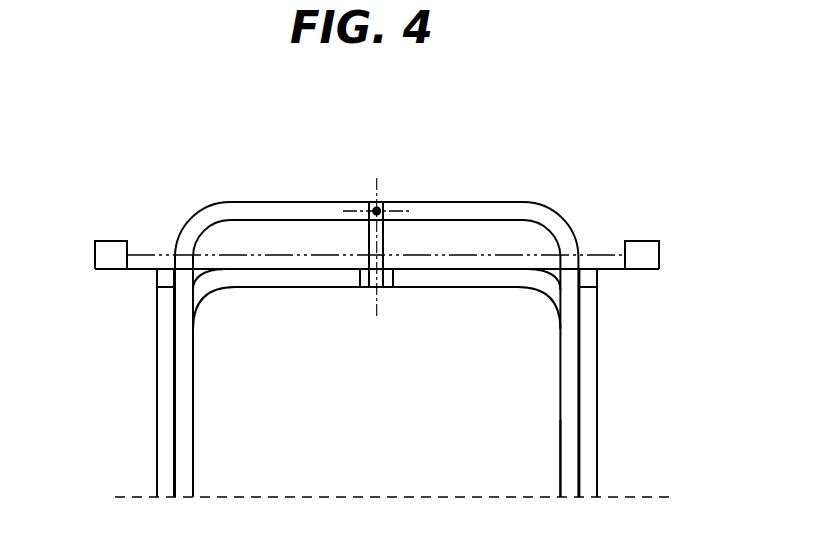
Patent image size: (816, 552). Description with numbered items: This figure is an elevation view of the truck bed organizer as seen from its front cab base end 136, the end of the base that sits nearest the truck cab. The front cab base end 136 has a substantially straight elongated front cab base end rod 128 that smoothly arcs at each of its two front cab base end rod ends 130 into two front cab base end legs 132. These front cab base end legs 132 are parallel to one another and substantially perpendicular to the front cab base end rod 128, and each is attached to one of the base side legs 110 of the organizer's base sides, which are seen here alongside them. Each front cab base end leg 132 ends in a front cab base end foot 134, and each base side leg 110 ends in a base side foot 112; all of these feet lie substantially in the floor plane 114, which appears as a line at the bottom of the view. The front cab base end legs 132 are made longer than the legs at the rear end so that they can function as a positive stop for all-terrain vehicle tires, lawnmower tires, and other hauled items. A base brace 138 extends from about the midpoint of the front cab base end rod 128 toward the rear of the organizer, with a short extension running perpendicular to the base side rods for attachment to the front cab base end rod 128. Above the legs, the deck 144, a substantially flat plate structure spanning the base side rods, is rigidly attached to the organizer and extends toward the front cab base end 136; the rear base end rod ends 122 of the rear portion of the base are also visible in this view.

The base side leg 110 is at (155, 380).
The base side foot 112 is at (155, 497).
The floor plane 114 is at (377, 497).
The rear base end rod end 122 is at (217, 295).
The front cab base end rod 128 is at (457, 202).
The front cab base end rod end 130 is at (220, 222).
The front cab base end leg 132 is at (193, 397).
The front cab base end foot 134 is at (193, 497).
The front cab base end 136 is at (317, 182).
The base brace 138 is at (385, 237).
The deck 144 is at (632, 269).